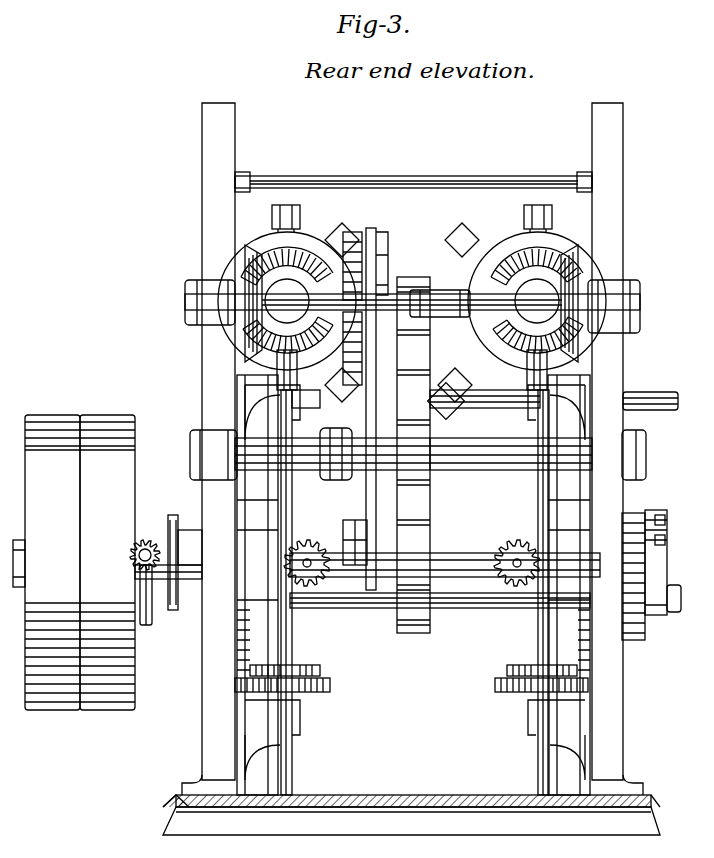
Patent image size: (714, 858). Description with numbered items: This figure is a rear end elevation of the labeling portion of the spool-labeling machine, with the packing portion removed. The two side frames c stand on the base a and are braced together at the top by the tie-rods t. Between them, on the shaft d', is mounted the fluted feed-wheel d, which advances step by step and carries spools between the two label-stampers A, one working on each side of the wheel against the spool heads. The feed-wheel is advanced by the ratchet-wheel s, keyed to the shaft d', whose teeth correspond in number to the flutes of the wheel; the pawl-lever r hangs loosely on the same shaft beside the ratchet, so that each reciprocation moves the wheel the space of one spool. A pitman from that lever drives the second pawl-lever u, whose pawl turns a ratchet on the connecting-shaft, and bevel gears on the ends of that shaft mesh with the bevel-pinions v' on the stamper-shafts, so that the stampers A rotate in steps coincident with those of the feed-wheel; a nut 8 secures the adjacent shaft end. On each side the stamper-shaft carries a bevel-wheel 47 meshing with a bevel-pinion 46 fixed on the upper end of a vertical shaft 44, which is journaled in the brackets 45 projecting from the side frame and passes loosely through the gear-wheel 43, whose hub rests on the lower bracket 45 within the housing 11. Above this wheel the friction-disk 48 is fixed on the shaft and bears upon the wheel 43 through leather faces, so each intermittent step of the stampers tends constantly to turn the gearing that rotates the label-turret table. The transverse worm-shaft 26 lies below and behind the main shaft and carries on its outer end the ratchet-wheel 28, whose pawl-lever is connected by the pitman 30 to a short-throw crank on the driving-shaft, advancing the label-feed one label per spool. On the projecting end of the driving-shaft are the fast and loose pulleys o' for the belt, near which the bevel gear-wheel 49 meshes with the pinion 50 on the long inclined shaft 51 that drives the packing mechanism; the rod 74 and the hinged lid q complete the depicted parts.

The side frames c is at (412, 449).
The base a is at (411, 815).
The tie-rods t is at (413, 175).
The label-stampers A is at (412, 287).
The bevel-wheel 47 is at (412, 299).
The bevel-pinions v' is at (412, 304).
The second pawl-lever u is at (402, 406).
The feed-wheel d is at (413, 447).
The ratchet-wheel s is at (397, 455).
The shaft d' is at (458, 449).
The shaft 8 is at (416, 435).
The bevel-pinion 46 is at (412, 370).
The brackets 45 is at (415, 590).
The housing 11 is at (413, 585).
The hinged lid or flap q is at (445, 558).
The transverse shaft 26 is at (440, 607).
The vertical shaft 44 is at (300, 514).
The pawl-lever r is at (356, 536).
The friction-disk 48 is at (320, 660).
The gear-wheel 43 is at (330, 685).
The fast pulley o' is at (141, 562).
The bevel gear-wheel 49 is at (185, 559).
The pinion 50 is at (145, 546).
The long shaft 51 is at (151, 603).
The rod 74 is at (690, 408).
The ratchet-wheel 28 is at (636, 585).
The pitman 30 is at (667, 567).